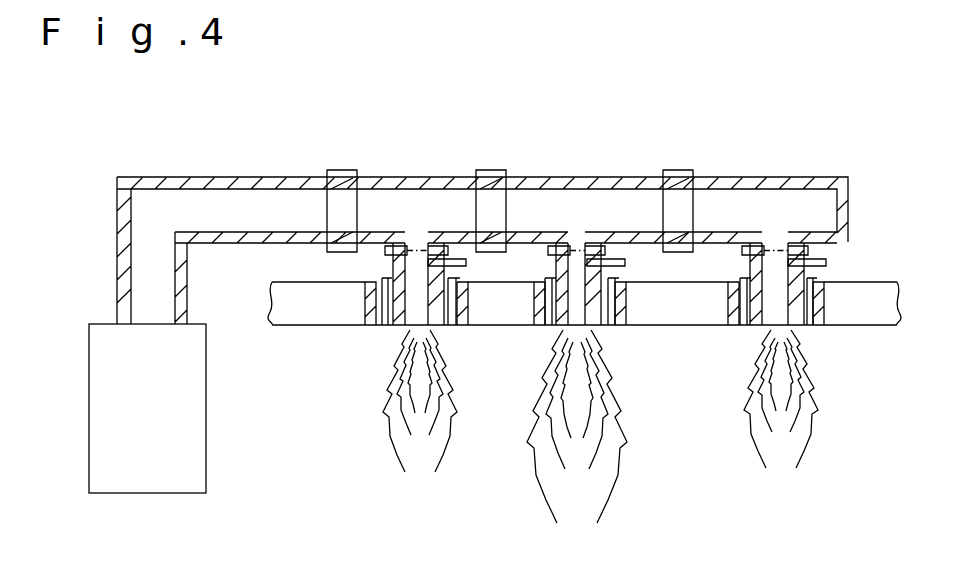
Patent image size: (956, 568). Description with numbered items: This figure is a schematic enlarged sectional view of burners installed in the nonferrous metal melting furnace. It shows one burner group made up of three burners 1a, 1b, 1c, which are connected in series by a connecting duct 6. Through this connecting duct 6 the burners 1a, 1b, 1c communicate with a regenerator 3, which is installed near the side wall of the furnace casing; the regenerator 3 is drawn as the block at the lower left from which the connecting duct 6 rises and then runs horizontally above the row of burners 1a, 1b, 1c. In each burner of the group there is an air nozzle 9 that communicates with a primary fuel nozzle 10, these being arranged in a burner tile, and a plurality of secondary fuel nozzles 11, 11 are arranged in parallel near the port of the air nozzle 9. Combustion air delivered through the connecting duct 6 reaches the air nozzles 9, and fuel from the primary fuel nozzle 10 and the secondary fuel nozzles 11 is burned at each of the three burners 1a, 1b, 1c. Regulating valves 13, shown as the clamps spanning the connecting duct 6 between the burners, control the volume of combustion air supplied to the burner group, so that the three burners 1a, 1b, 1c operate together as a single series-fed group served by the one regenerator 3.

The burner 1a is at (552, 327).
The burner 1b is at (392, 344).
The burner 1c is at (804, 330).
The regenerator 3 is at (197, 456).
The connecting duct 6 is at (205, 178).
The air nozzle 9 is at (400, 368).
The primary fuel nozzle 10 is at (466, 262).
The secondary fuel nozzle 11 is at (377, 326).
The regulating valve 13 is at (386, 248).